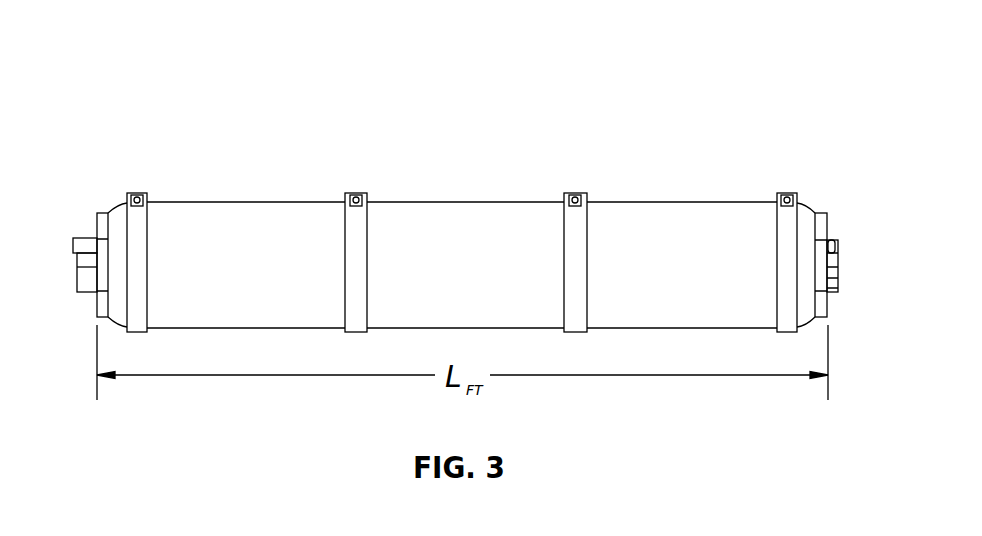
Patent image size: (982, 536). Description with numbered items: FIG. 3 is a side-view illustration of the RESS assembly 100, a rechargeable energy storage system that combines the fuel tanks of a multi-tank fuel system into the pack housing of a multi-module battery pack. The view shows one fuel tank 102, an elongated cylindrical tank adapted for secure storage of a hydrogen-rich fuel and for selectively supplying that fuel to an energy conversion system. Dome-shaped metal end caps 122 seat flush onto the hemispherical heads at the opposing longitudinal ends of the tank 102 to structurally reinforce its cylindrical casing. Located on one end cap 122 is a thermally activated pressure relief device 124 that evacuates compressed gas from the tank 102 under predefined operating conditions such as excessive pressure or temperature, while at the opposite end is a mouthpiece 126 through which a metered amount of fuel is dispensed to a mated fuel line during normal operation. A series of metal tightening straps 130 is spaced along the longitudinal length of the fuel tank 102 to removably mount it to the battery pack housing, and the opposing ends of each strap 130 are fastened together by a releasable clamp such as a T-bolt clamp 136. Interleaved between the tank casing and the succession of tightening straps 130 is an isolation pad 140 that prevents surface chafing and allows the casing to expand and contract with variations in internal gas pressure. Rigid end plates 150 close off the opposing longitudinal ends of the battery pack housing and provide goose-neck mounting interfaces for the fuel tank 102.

The RESS assembly 100 is at (242, 63).
The fuel tank 102 is at (217, 157).
The end cap 122 is at (110, 208).
The thermally activated pressure relief device 124 is at (831, 243).
The mouthpiece 126 is at (74, 243).
The tightening strap 130 is at (142, 222).
The T-bolt clamp 136 is at (355, 200).
The isolation pad 140 is at (441, 215).
The end plate 150 is at (96, 302).